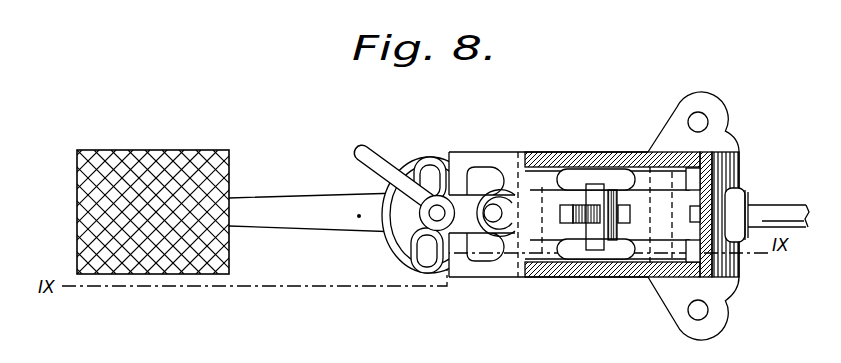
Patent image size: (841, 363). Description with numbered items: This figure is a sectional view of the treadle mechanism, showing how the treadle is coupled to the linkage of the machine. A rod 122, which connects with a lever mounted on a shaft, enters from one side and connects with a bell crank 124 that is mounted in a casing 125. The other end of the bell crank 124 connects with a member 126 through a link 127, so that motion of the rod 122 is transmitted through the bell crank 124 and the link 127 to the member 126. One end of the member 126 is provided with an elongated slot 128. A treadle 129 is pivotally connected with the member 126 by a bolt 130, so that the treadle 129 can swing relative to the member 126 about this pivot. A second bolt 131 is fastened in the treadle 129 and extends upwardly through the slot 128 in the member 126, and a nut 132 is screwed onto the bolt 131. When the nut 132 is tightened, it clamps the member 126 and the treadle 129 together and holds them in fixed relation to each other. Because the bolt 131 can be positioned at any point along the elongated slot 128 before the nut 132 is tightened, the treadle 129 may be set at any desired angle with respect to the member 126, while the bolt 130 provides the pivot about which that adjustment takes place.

The rod 122 is at (785, 201).
The bell crank 124 is at (633, 236).
The casing 125 is at (605, 170).
The member 126 is at (574, 195).
The link 127 is at (594, 216).
The elongated slot 128 is at (420, 246).
The treadle 129 is at (272, 207).
The bolt 130 is at (493, 218).
The bolt 131 is at (436, 214).
The nut 132 is at (453, 186).